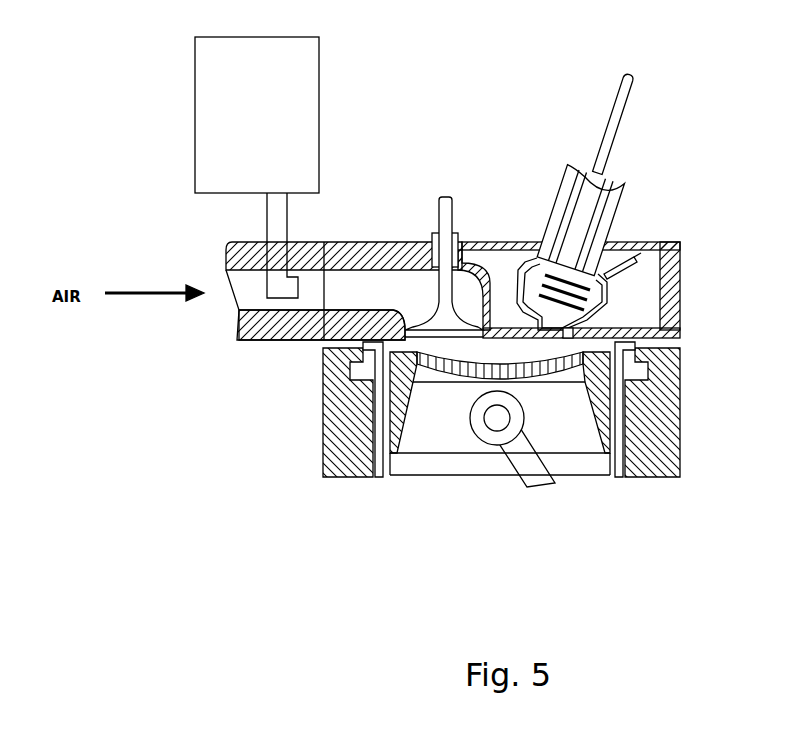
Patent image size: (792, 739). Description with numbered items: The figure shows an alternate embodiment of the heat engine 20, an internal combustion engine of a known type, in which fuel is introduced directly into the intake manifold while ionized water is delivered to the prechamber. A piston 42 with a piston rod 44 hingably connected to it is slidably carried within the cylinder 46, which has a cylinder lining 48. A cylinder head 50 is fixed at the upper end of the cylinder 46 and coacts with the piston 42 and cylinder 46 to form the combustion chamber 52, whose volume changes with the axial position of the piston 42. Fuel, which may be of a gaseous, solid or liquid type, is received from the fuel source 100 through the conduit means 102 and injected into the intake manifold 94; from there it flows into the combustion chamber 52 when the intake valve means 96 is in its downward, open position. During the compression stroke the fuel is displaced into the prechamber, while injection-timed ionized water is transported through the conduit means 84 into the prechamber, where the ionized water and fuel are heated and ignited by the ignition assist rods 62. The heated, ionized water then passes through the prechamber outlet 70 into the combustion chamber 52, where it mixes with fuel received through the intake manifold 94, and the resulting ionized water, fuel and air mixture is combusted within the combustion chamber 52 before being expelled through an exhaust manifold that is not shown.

The heat engine 20 is at (424, 412).
The piston 42 is at (500, 336).
The piston rod 44 is at (532, 472).
The cylinder 46 is at (335, 387).
The cylinder lining 48 is at (387, 450).
The cylinder head 50 is at (645, 238).
The combustion chamber 52 is at (533, 367).
The ignition assist rods 62 is at (600, 278).
The prechamber outlet 70 is at (568, 330).
The conduit means 84 is at (608, 113).
The intake manifold 94 is at (315, 291).
The intake valve means 96 is at (447, 197).
The fuel source 100 is at (320, 102).
The conduit means 102 is at (290, 218).